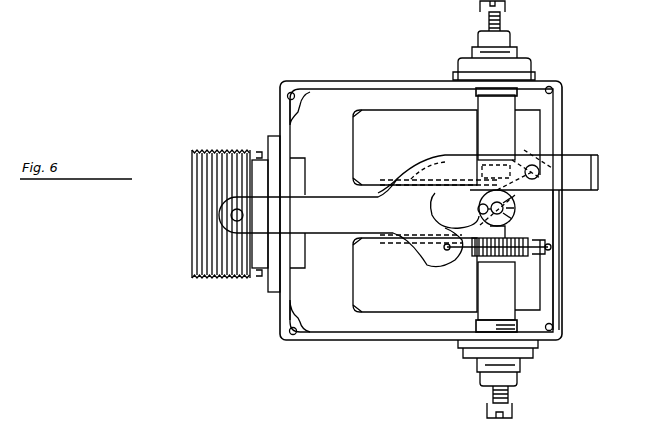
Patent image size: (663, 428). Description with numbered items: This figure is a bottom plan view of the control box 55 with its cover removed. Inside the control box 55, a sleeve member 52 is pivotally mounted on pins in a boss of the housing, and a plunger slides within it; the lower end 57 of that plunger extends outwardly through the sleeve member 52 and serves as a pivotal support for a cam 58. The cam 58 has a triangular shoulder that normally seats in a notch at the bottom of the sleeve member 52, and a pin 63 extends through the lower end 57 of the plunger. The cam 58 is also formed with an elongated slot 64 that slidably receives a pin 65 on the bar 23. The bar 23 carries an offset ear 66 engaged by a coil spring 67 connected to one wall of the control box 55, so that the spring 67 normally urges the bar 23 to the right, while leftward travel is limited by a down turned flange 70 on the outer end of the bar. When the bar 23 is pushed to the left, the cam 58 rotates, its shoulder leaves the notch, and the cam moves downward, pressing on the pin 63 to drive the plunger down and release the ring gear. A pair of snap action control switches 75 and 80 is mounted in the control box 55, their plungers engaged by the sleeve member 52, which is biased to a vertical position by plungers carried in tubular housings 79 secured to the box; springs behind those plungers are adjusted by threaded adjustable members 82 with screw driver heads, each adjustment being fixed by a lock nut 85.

The bar 23 is at (437, 152).
The sleeve member 52 is at (493, 203).
The control box 55 is at (283, 310).
The lower end of plunger 57 is at (513, 211).
The cam 58 is at (560, 196).
The pin 63 is at (478, 209).
The elongated slot 64 is at (527, 210).
The pin 65 is at (545, 165).
The offset ear 66 is at (415, 255).
The coil spring 67 is at (468, 268).
The down turned flange 70 is at (600, 170).
The snap action control switch 75 is at (405, 303).
The tubular housing 79 is at (497, 116).
The snap action control switch 80 is at (397, 145).
The adjustable member 82 is at (500, 20).
The lock nut 85 is at (510, 42).